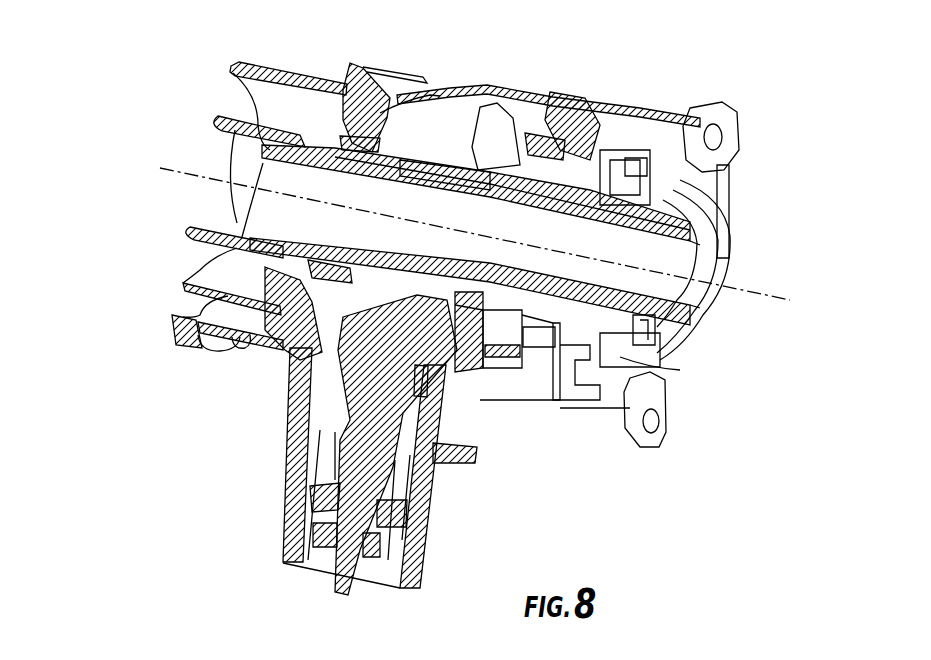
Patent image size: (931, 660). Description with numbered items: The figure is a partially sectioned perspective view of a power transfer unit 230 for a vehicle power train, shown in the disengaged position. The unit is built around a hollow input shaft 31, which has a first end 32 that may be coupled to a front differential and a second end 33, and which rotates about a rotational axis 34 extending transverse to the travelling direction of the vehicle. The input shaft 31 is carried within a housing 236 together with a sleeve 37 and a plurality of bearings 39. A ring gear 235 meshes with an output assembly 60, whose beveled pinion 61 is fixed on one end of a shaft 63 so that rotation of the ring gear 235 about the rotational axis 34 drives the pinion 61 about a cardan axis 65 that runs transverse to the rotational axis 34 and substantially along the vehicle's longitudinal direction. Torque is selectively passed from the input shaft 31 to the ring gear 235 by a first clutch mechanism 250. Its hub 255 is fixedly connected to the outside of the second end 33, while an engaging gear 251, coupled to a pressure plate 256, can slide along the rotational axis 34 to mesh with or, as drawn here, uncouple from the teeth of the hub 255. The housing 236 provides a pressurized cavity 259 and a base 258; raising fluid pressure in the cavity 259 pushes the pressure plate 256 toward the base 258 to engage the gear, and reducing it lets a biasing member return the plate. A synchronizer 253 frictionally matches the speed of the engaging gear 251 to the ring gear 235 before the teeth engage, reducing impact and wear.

The input shaft 31 is at (283, 172).
The first end 32 is at (255, 160).
The second end 33 is at (665, 288).
The rotational axis 34 is at (737, 294).
The sleeve 37 is at (452, 164).
The bearing 39 is at (330, 150).
The output assembly 60 is at (207, 480).
The pinion 61 is at (337, 323).
The shaft 63 is at (330, 430).
The cardan axis 65 is at (283, 545).
The power transfer unit 230 is at (163, 282).
The ring gear 235 is at (532, 150).
The housing 236 is at (380, 110).
The first clutch mechanism 250 is at (622, 174).
The engaging gear 251 is at (553, 372).
The synchronizer 253 is at (617, 185).
The hub 255 is at (632, 183).
The pressure plate 256 is at (633, 165).
The base 258 is at (657, 357).
The cavity 259 is at (597, 125).